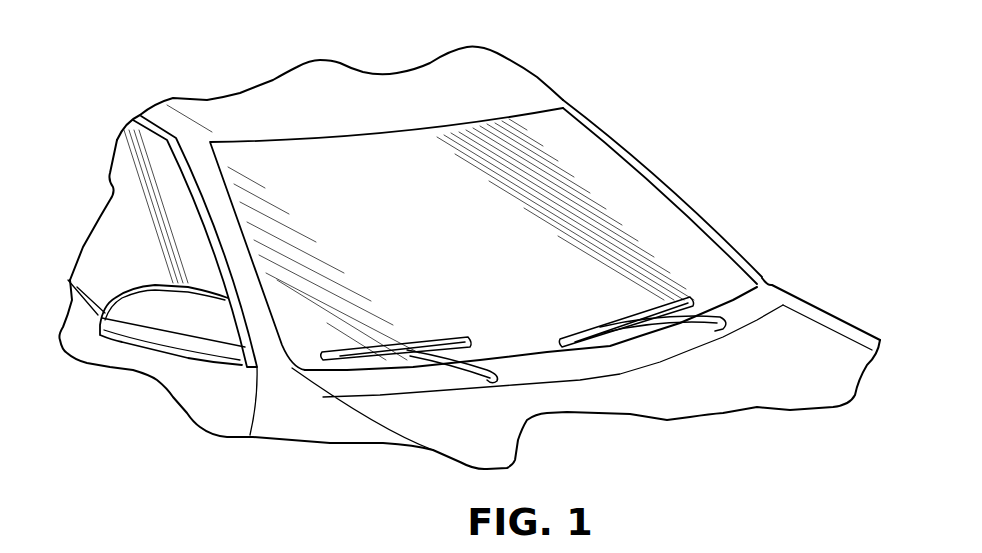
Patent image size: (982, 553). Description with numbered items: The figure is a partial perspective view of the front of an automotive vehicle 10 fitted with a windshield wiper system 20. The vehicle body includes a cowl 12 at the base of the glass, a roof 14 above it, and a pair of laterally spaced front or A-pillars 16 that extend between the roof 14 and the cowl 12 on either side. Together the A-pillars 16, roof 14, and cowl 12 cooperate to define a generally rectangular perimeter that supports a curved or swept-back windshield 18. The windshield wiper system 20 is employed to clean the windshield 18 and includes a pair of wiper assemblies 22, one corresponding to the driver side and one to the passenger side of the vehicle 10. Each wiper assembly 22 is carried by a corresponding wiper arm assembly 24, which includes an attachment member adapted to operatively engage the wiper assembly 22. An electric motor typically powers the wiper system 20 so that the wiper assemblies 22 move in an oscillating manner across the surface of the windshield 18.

The vehicle 10 is at (93, 137).
The cowl 12 is at (758, 306).
The roof 14 is at (505, 85).
The A-pillars 16 is at (223, 227).
The windshield 18 is at (597, 163).
The windshield wiper system 20 is at (613, 390).
The wiper assembly 22 is at (450, 337).
The wiper arm assembly 24 is at (477, 372).